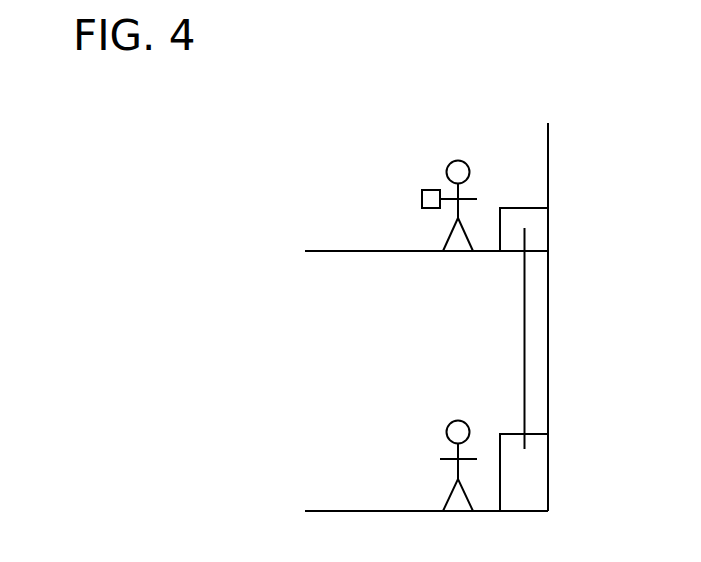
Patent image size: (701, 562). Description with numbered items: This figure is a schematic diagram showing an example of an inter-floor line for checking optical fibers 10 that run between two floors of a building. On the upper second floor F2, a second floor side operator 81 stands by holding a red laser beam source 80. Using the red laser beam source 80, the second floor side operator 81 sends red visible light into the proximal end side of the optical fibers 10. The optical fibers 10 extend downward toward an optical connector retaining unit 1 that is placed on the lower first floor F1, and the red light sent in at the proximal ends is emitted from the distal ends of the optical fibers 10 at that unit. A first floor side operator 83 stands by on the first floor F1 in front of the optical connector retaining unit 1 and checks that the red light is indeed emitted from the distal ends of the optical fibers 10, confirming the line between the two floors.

The optical connector retaining unit 1 is at (532, 476).
The optical fibers 10 is at (525, 312).
The red laser beam source 80 is at (420, 198).
The second floor side operator 81 is at (453, 160).
The first floor side operator 83 is at (453, 420).
The first floor F1 is at (332, 511).
The second floor F2 is at (332, 251).